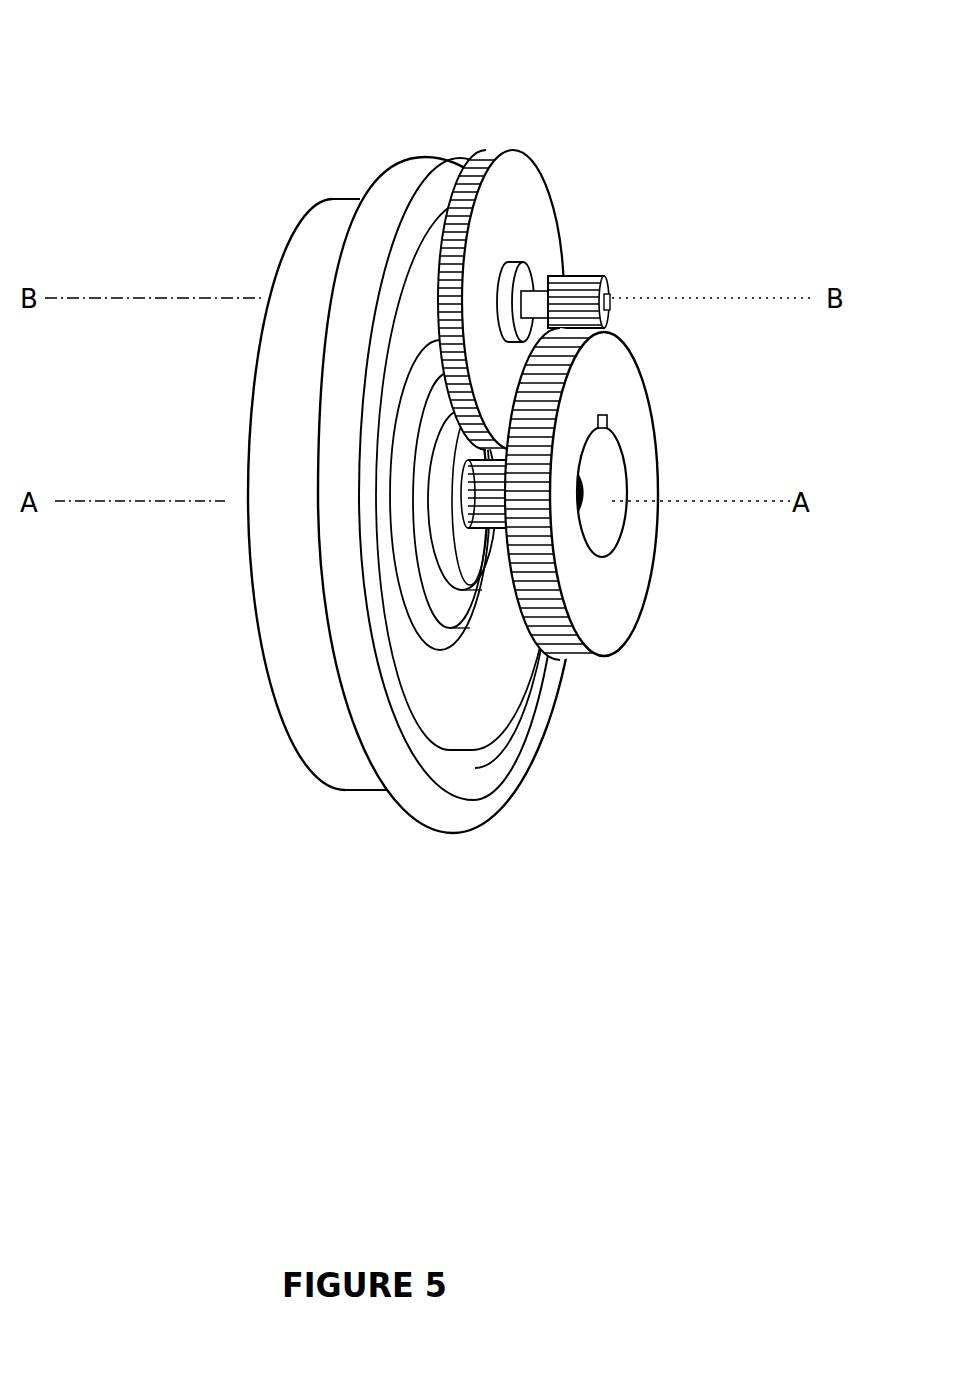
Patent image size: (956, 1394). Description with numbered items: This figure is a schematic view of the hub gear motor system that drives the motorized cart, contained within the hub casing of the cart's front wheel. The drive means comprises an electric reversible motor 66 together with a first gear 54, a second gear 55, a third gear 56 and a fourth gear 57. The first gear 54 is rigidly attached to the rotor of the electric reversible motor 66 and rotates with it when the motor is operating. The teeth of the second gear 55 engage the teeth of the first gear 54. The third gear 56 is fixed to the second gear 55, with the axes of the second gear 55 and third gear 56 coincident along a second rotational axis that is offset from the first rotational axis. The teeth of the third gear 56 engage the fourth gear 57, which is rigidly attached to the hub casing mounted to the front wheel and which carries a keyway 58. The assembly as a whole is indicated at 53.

The gear train assembly 53 is at (226, 171).
The first gear 54 is at (495, 530).
The second gear 55 is at (550, 200).
The third gear 56 is at (612, 298).
The fourth gear 57 is at (645, 602).
The keyway 58 is at (607, 424).
The electric reversible motor 66 is at (280, 660).